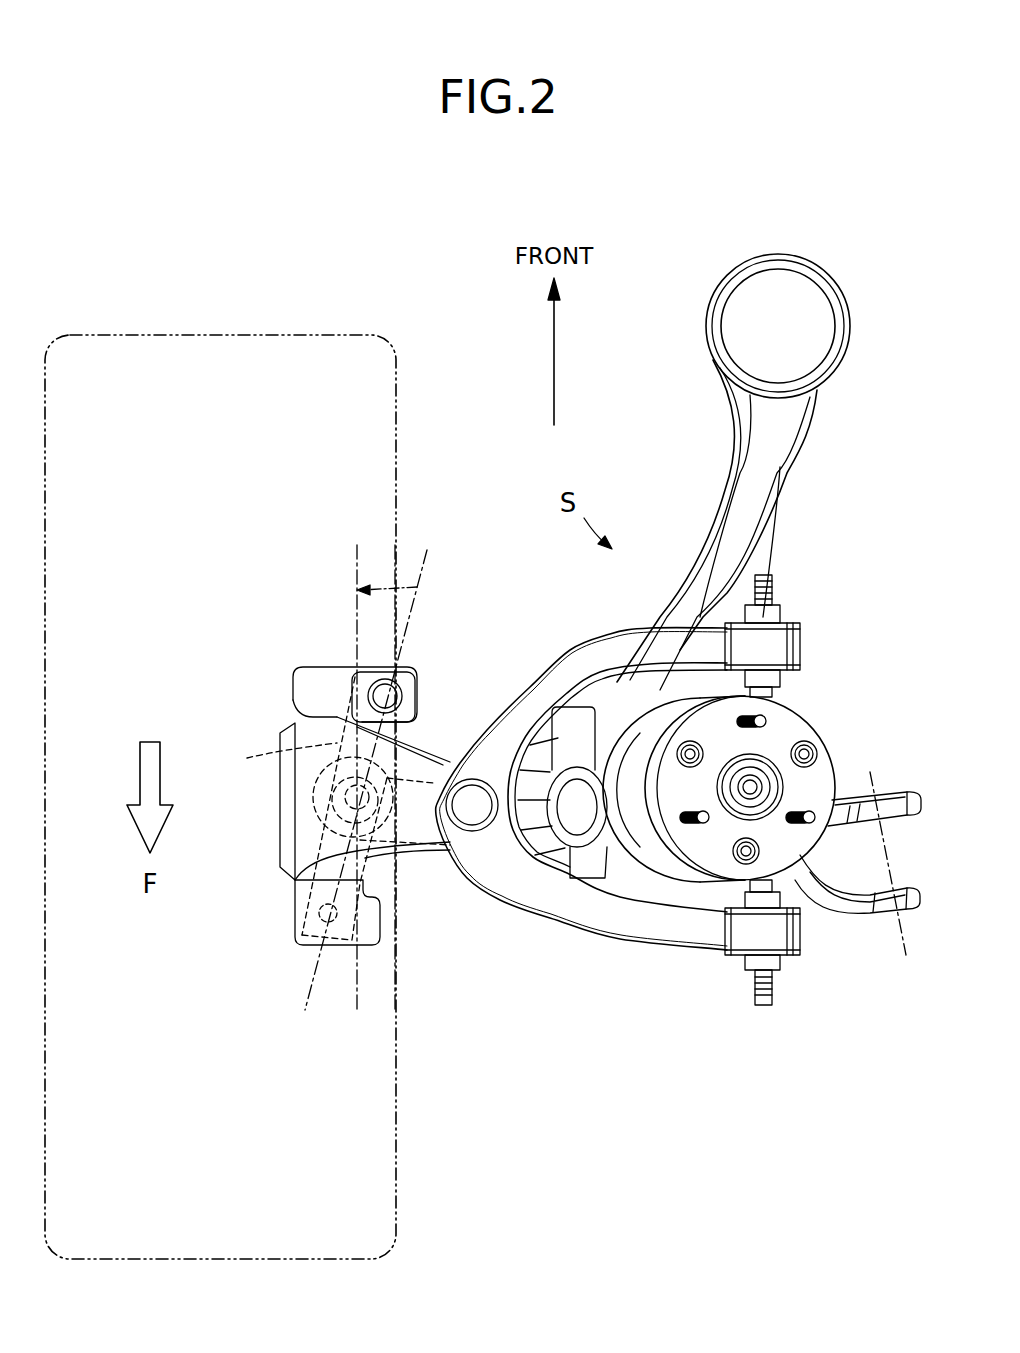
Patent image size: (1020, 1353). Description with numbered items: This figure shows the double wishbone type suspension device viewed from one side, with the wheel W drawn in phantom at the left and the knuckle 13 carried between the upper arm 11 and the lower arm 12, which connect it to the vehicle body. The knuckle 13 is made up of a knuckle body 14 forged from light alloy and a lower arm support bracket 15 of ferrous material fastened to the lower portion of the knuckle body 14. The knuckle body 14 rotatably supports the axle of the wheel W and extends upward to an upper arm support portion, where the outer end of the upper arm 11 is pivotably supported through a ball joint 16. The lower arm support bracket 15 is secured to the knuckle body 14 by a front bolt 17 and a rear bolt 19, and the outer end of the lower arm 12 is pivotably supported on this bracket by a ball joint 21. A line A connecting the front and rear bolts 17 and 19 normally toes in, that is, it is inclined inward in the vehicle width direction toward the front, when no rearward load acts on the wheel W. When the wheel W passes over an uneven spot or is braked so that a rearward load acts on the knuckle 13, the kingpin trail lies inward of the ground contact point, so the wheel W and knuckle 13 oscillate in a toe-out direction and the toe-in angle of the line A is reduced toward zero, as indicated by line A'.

The upper arm 11 is at (592, 657).
The lower arm 12 is at (705, 562).
The knuckle 13 is at (262, 848).
The knuckle body 14 is at (420, 740).
The lower arm support bracket 15 is at (271, 758).
The ball joint 16 is at (473, 812).
The bolt 17 is at (368, 677).
The bolt 19 is at (319, 913).
The ball joint 21 is at (310, 795).
The wheel W is at (290, 335).
The line A is at (387, 777).
The line A' is at (327, 776).